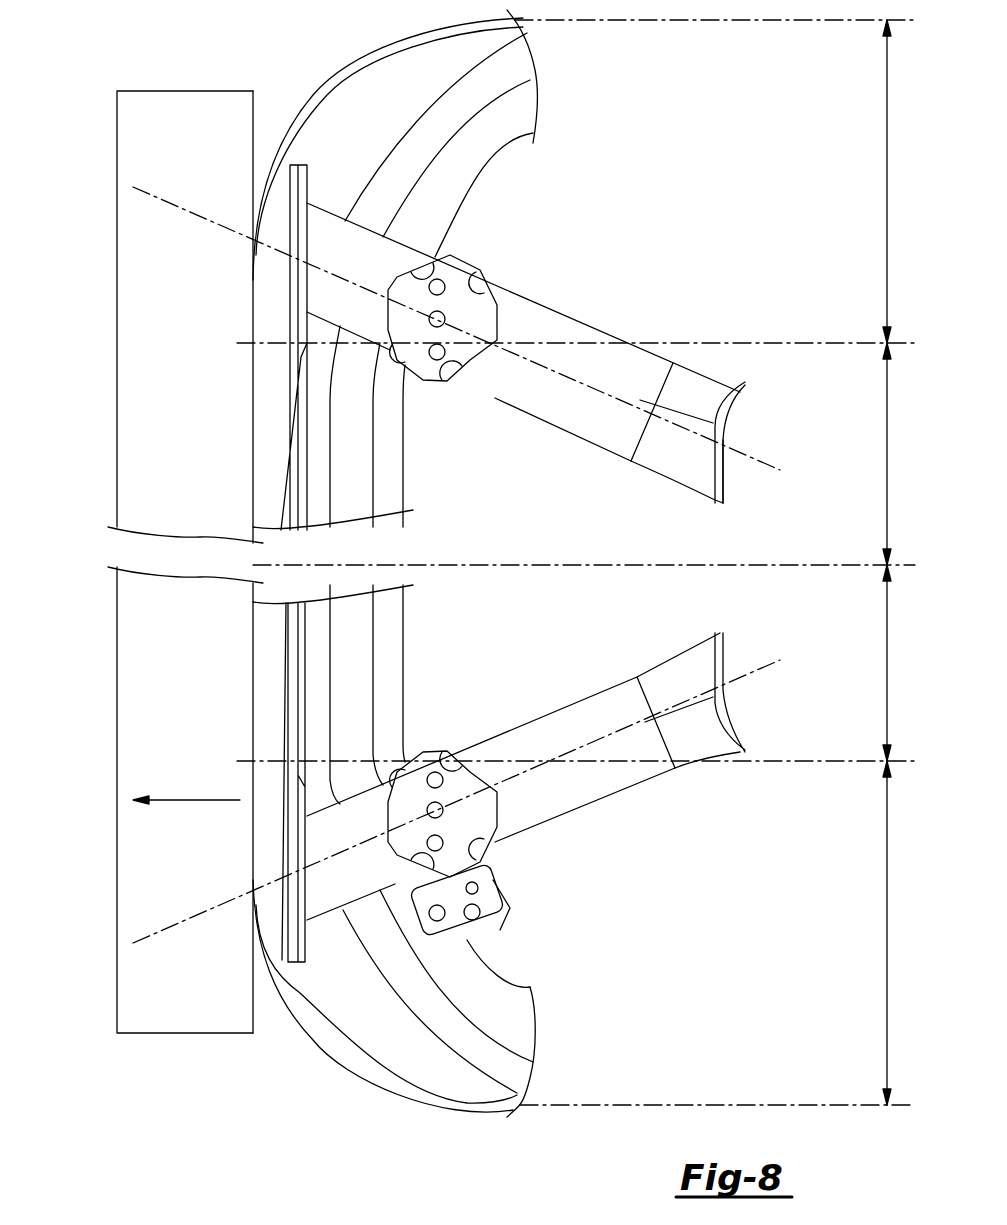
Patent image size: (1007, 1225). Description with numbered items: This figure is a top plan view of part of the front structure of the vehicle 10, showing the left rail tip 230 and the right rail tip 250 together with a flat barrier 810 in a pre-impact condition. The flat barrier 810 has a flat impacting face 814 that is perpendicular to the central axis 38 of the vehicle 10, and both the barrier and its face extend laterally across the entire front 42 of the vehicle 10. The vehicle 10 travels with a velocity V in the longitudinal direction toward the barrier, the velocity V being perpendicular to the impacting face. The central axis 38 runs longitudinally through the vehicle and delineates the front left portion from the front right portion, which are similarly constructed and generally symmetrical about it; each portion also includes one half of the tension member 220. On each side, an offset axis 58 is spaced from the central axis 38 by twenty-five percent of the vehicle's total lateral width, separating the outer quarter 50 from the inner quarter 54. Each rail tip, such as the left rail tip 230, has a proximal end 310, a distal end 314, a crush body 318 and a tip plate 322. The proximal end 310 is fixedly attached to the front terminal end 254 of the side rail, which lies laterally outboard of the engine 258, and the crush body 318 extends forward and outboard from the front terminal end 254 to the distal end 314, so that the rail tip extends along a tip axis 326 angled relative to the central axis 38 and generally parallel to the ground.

The vehicle 10 is at (727, 197).
The central axis 38 is at (440, 563).
The front 42 is at (340, 1060).
The outer quarter 50 is at (887, 103).
The inner quarter 54 is at (887, 491).
The offset axis 58 is at (793, 343).
The tension member 220 is at (292, 480).
The left rail tip 230 is at (580, 697).
The right rail tip 250 is at (547, 307).
The front terminal end 254 is at (713, 750).
The engine 258 is at (787, 221).
The proximal end 310 is at (703, 403).
The distal end 314 is at (318, 238).
The crush body 318 is at (573, 787).
The tip plate 322 is at (300, 850).
The tip axis 326 is at (610, 397).
The flat barrier 810 is at (130, 720).
The flat impacting face 814 is at (254, 118).
The velocity V is at (177, 800).